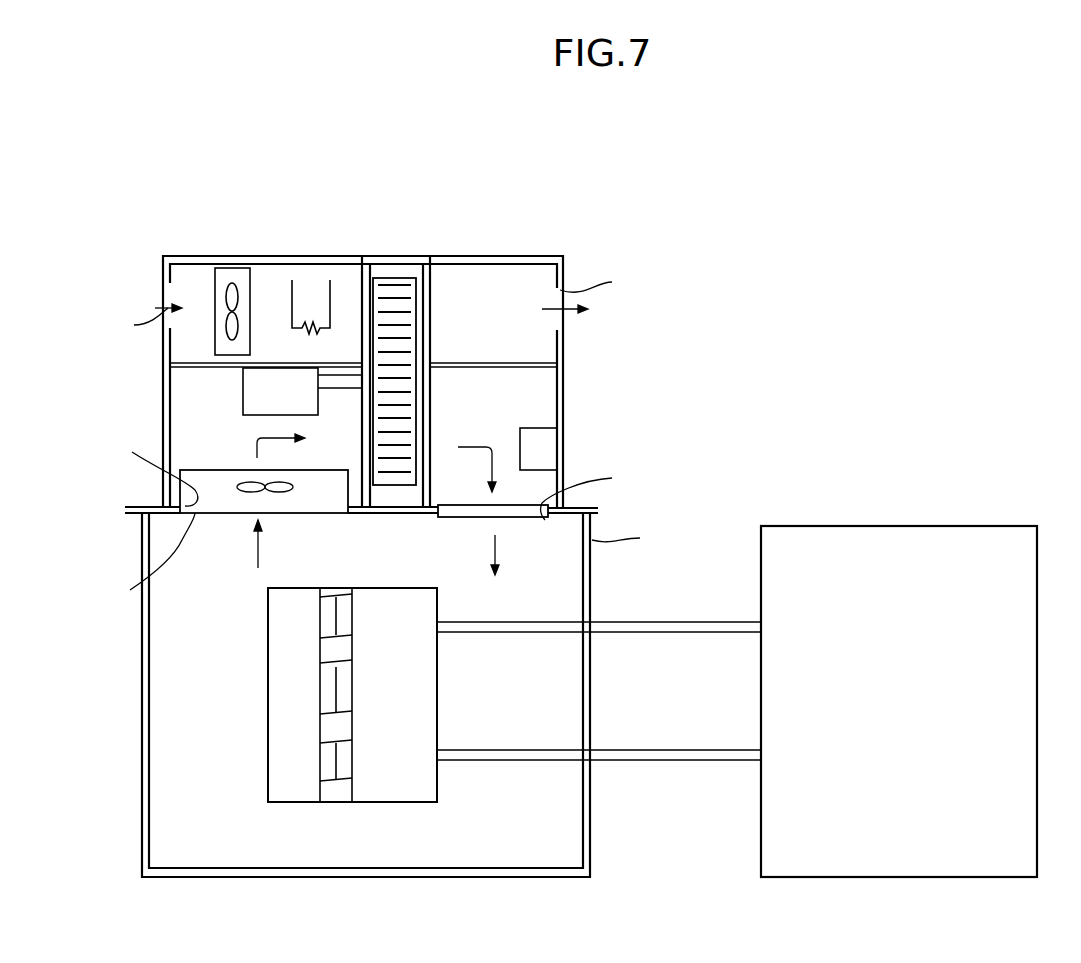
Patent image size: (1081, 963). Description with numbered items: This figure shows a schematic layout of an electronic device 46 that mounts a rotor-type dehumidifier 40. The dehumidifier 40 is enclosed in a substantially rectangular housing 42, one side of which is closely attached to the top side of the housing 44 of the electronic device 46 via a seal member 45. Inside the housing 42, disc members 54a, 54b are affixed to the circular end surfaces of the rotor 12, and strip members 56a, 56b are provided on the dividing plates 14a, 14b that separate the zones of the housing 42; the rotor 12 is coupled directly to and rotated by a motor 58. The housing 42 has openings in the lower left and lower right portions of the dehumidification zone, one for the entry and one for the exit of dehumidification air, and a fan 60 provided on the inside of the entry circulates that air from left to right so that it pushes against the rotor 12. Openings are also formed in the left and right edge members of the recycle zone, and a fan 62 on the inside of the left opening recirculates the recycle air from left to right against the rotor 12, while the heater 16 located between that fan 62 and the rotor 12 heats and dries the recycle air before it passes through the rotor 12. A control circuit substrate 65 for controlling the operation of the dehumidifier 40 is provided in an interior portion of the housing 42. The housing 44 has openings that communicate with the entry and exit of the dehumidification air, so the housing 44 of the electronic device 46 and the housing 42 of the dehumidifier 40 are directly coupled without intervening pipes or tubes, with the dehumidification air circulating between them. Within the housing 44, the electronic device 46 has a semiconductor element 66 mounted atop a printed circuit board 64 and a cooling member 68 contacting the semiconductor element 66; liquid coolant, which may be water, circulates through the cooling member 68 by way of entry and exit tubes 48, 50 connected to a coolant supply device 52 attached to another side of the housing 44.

The rotor-type dehumidifier 40 is at (141, 245).
The housing 42 is at (537, 258).
The rotor 12 is at (393, 265).
The dividing plate 14a is at (522, 368).
The dividing plate 14b is at (196, 367).
The heater 16 is at (292, 300).
The disc member 54a is at (418, 262).
The disc member 54b is at (373, 278).
The strip member 56a is at (432, 270).
The strip member 56b is at (358, 272).
The motor 58 is at (243, 392).
The fan 60 is at (280, 493).
The fan 62 is at (233, 272).
The control circuit substrate 65 is at (538, 455).
The housing 44 is at (142, 706).
The seal member 45 is at (592, 509).
The electronic device 46 is at (122, 560).
The pipe 48 is at (665, 756).
The pipe 50 is at (690, 626).
The coolant supply device 52 is at (998, 526).
The printed circuit board 64 is at (272, 782).
The semiconductor element 66 is at (328, 775).
The cooling member 68 is at (407, 790).